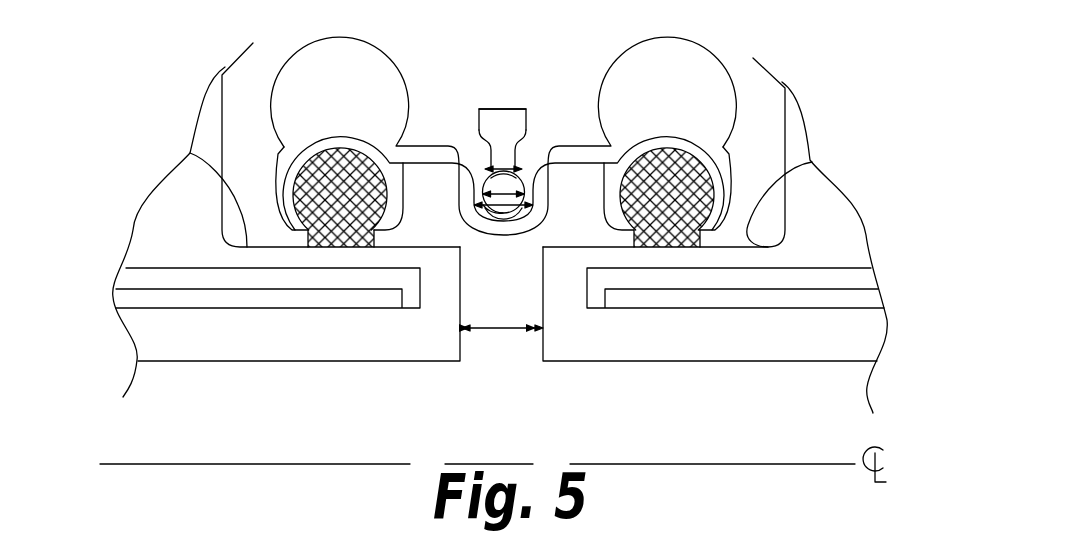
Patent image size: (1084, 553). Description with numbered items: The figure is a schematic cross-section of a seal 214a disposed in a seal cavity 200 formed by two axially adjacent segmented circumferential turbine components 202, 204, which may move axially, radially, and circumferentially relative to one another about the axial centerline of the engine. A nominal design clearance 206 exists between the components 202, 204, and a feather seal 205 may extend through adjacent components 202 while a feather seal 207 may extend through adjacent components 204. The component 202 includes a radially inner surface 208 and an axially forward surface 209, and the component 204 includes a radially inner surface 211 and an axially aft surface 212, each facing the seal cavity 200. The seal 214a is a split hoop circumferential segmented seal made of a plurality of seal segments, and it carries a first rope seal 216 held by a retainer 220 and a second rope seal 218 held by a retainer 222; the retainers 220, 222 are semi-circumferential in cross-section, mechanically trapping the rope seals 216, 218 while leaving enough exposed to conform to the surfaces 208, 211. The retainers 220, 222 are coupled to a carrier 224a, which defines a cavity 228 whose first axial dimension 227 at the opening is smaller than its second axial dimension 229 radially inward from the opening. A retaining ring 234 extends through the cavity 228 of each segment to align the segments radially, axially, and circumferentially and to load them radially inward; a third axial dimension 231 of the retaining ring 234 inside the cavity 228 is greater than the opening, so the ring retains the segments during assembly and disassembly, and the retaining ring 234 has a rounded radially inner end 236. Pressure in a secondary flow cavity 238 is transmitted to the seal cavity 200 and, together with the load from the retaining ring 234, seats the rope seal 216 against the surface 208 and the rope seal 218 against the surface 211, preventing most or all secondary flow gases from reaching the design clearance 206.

The seal cavity 200 is at (722, 80).
The turbine component 202 is at (343, 362).
The turbine component 204 is at (740, 361).
The feather seal 205 is at (198, 300).
The nominal design clearance 206 is at (503, 331).
The feather seal 207 is at (635, 300).
The radially inner surface 208 is at (190, 153).
The axially forward surface 209 is at (222, 137).
The radially inner surface 211 is at (812, 163).
The axially aft surface 212 is at (784, 142).
The seal 214a is at (525, 78).
The first rope seal 216 is at (367, 200).
The second rope seal 218 is at (640, 200).
The retainer 220 is at (405, 210).
The retainer 222 is at (602, 210).
The carrier 224a is at (435, 145).
The first axial dimension 227 is at (503, 165).
The cavity 228 is at (522, 214).
The second axial dimension 229 is at (502, 211).
The third axial dimension 231 is at (503, 192).
The retaining ring 234 is at (527, 121).
The rounded radially inner end 236 is at (481, 208).
The secondary flow cavity 238 is at (289, 55).